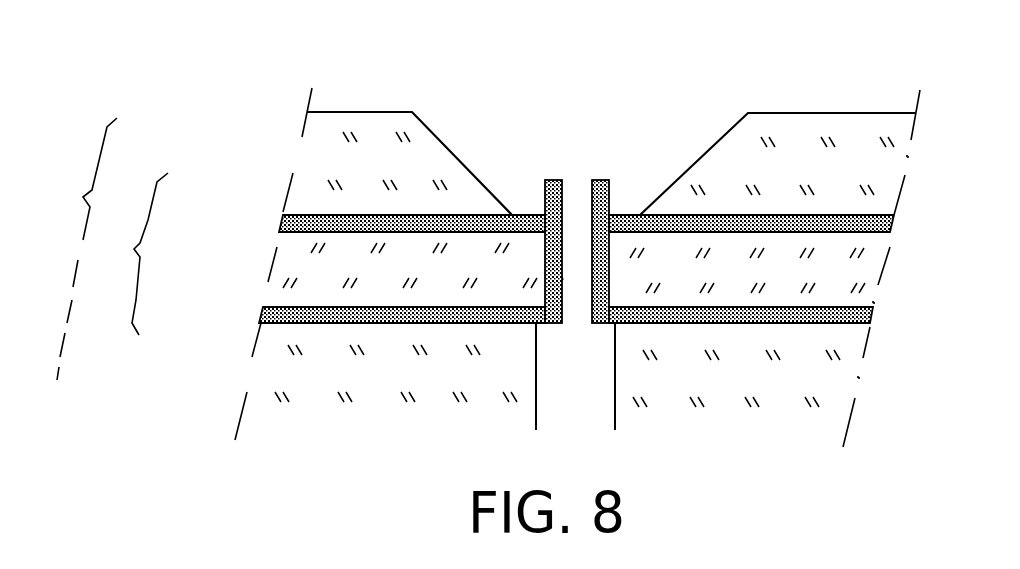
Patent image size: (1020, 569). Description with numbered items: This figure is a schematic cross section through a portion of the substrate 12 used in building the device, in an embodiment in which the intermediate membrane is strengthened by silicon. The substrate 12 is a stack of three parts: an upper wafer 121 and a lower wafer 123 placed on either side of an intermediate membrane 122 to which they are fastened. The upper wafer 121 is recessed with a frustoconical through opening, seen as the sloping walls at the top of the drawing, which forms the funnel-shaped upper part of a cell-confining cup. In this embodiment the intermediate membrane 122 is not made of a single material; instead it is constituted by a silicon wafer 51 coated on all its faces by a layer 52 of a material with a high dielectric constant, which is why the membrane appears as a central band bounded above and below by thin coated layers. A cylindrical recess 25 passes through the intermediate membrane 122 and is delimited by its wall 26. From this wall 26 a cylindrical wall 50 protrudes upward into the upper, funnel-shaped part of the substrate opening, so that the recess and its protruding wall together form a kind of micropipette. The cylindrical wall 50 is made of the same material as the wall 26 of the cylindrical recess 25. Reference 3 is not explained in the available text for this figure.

The substrate 3 is at (373, 112).
The substrate 12 is at (134, 254).
The wafer 121 is at (303, 152).
The intermediate membrane 122 is at (73, 249).
The wafer 123 is at (264, 383).
The silicon wafer 51 is at (290, 265).
The layer of a material with a high dielectric constant 52 is at (283, 215).
The cylindrical wall 50 is at (562, 198).
The cylindrical recess 25 is at (586, 240).
The wall 26 is at (562, 277).